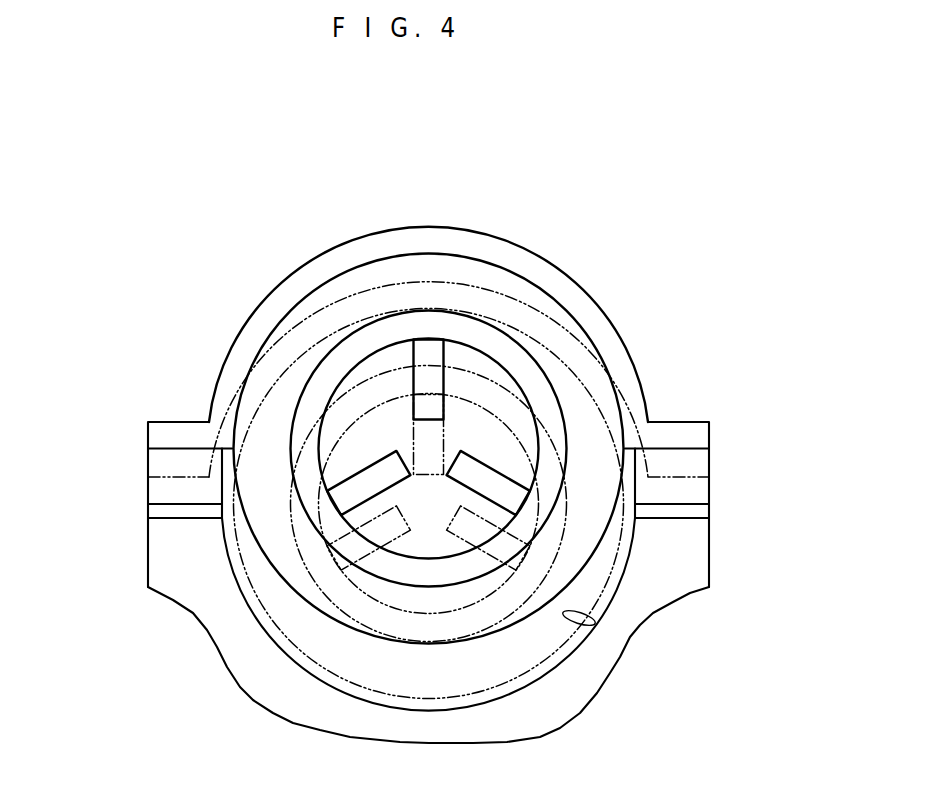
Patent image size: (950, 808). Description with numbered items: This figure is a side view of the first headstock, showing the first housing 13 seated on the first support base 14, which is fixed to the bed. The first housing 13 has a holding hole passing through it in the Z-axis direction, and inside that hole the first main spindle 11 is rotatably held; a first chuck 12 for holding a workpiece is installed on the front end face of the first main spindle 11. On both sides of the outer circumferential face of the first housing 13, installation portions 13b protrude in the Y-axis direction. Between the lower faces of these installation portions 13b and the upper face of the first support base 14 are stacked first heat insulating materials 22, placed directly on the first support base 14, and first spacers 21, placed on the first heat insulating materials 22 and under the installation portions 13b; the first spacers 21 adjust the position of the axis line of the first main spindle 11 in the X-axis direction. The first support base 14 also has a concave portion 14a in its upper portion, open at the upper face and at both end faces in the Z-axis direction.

The first main spindle 11 is at (450, 327).
The first chuck 12 is at (473, 360).
The first housing 13 is at (345, 248).
The installation portions 13b is at (173, 428).
The first support base 14 is at (697, 574).
The concave portion 14a is at (562, 612).
The first spacers 21 is at (158, 460).
The first heat insulating materials 22 is at (156, 508).